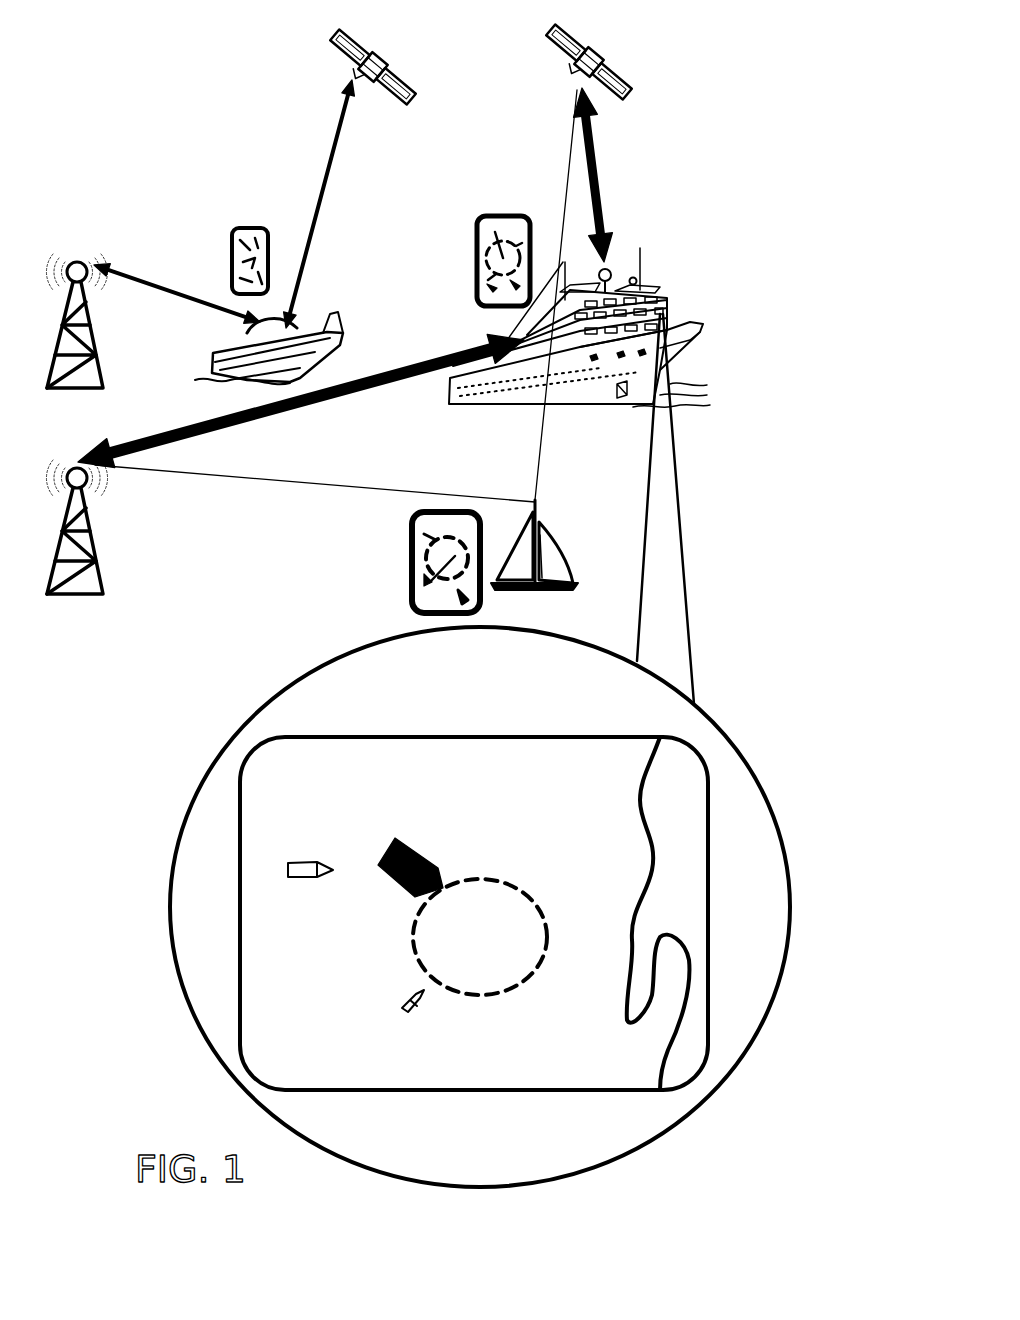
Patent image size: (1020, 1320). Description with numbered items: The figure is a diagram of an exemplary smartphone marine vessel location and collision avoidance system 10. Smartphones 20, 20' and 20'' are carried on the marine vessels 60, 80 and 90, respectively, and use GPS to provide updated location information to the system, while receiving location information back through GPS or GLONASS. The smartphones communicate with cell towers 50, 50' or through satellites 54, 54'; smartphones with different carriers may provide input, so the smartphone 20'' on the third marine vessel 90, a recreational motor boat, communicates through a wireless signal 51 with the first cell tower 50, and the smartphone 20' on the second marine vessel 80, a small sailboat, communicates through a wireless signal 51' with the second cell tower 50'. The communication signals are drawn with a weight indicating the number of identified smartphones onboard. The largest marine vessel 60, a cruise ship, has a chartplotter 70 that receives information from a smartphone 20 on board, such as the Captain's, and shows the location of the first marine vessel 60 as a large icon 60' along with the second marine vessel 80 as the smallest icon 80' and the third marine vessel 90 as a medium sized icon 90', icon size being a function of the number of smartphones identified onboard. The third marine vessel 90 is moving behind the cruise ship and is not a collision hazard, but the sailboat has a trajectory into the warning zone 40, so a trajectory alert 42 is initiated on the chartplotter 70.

The smartphone marine vessel location and collision avoidance system 10 is at (163, 105).
The smartphone 20 is at (502, 215).
The smartphone 20' is at (409, 562).
The smartphone 20'' is at (244, 222).
The warning zone 40 is at (540, 898).
The trajectory alert 42 is at (540, 760).
The cell tower 50 is at (90, 274).
The second cell tower 50' is at (115, 527).
The wireless signal 51 is at (177, 257).
The wireless signal 51' is at (315, 513).
The satellite 54 is at (399, 70).
The satellite 54' is at (623, 63).
The first marine vessel 60 is at (579, 298).
The first marine vessel icon 60' is at (431, 846).
The chartplotter 70 is at (700, 730).
The second marine vessel 80 is at (554, 530).
The second marine vessel icon 80' is at (456, 1026).
The third marine vessel 90 is at (286, 309).
The third marine vessel icon 90' is at (320, 927).